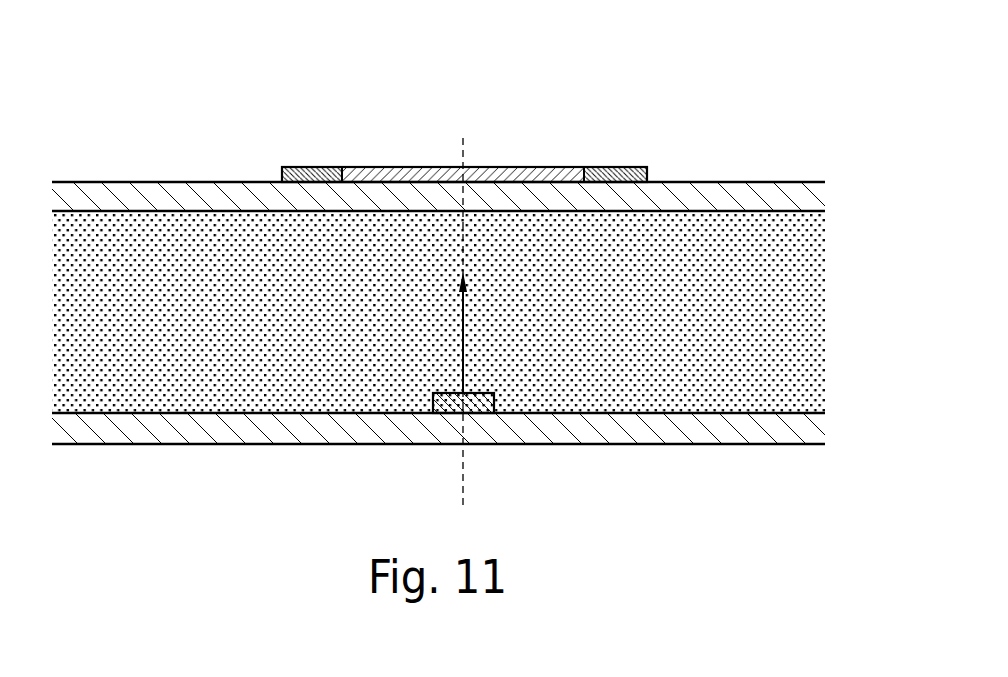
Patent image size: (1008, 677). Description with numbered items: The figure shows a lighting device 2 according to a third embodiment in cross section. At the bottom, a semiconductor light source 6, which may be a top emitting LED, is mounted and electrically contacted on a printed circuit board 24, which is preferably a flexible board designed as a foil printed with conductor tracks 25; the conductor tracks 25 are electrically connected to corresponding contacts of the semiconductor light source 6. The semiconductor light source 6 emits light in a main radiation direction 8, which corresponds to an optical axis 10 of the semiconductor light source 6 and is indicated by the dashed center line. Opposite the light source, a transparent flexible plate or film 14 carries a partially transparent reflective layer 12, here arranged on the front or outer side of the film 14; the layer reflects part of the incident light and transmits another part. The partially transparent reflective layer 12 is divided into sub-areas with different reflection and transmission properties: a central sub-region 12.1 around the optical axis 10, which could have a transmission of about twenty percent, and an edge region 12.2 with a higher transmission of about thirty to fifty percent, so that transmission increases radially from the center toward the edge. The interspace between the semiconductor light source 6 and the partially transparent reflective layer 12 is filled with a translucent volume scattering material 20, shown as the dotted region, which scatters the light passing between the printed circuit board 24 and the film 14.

The lighting device 2 is at (728, 113).
The semiconductor light source 6 is at (494, 394).
The main radiation direction 8 is at (463, 347).
The optical axis 10 is at (463, 150).
The partially transparent reflective layer 12 is at (487, 130).
The sub-region 12.1 is at (553, 162).
The edge region 12.2 is at (322, 163).
The film 14 is at (761, 197).
The translucent volume scattering material 20 is at (717, 334).
The printed circuit board 24 is at (740, 427).
The conductor tracks 25 is at (772, 410).